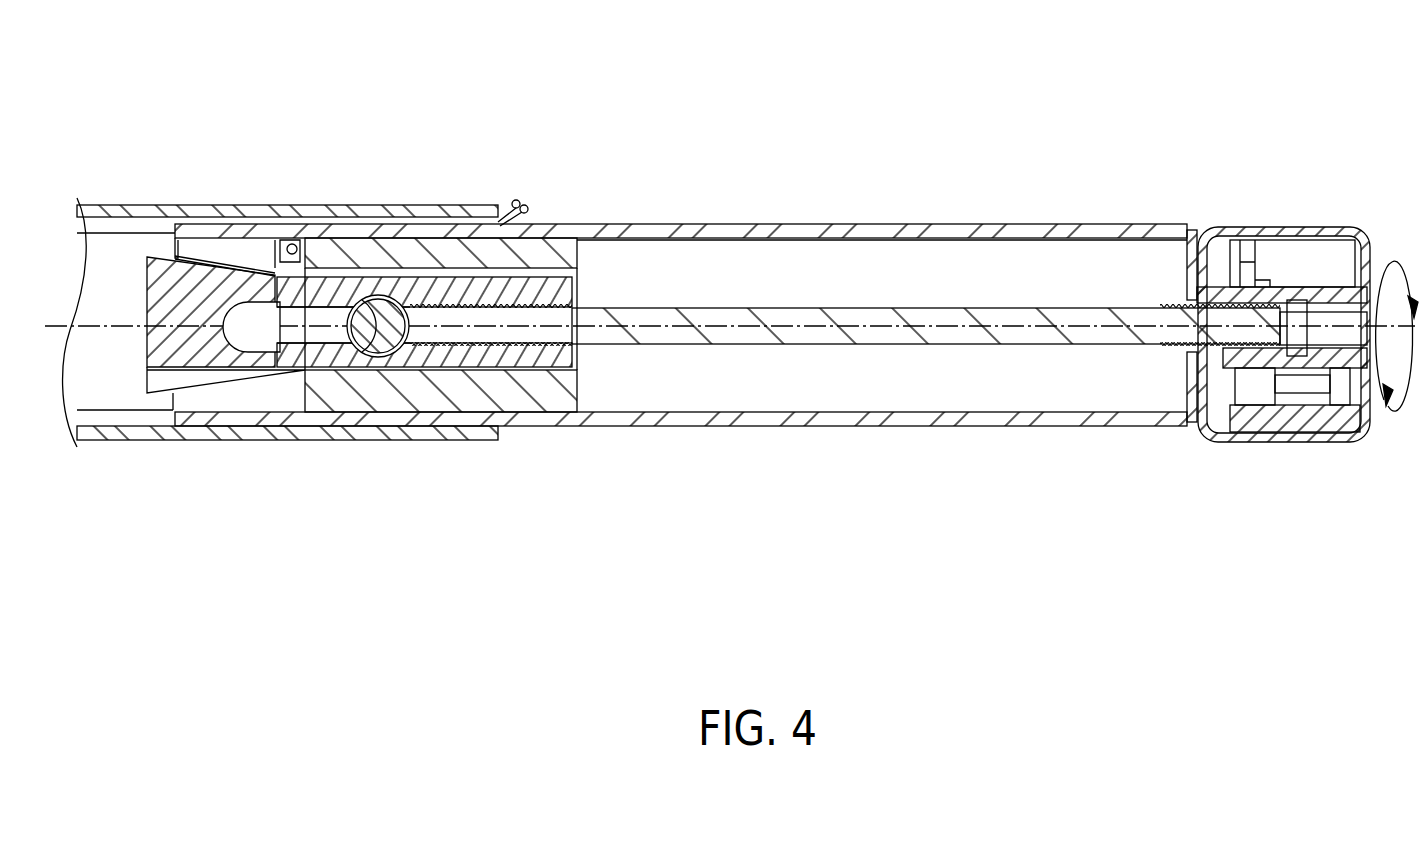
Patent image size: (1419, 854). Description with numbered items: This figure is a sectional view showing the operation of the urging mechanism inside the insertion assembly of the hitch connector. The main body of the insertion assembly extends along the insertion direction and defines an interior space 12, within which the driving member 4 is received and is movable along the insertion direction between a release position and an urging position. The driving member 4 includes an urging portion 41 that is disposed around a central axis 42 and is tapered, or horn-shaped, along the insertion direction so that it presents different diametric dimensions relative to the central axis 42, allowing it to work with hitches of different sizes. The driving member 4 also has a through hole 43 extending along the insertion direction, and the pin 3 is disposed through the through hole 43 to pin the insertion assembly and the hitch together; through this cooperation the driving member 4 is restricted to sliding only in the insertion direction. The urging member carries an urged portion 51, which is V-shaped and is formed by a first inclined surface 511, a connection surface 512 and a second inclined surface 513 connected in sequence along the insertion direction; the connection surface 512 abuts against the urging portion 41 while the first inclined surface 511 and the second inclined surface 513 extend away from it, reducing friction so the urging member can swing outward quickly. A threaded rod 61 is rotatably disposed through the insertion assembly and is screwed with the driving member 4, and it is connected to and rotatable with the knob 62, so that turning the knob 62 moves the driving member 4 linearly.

The pin 3 is at (372, 345).
The driving member 4 is at (460, 270).
The interior space 12 is at (842, 262).
The urging portion 41 is at (150, 262).
The central axis 42 is at (123, 328).
The through hole 43 is at (332, 310).
The urged portion 51 is at (260, 165).
The first inclined surface 511 is at (180, 258).
The connection surface 512 is at (202, 264).
The second inclined surface 513 is at (260, 262).
The threaded rod 61 is at (915, 342).
The knob 62 is at (1276, 240).